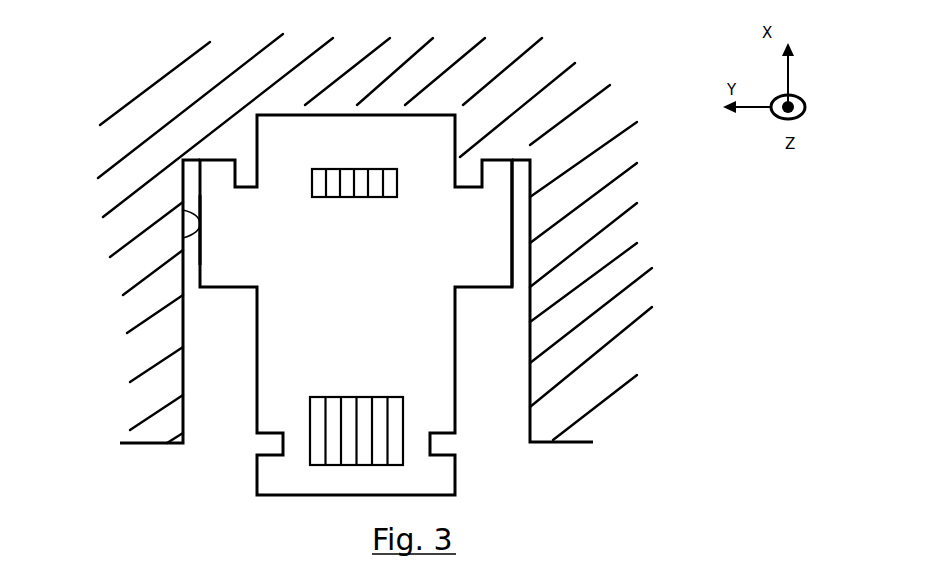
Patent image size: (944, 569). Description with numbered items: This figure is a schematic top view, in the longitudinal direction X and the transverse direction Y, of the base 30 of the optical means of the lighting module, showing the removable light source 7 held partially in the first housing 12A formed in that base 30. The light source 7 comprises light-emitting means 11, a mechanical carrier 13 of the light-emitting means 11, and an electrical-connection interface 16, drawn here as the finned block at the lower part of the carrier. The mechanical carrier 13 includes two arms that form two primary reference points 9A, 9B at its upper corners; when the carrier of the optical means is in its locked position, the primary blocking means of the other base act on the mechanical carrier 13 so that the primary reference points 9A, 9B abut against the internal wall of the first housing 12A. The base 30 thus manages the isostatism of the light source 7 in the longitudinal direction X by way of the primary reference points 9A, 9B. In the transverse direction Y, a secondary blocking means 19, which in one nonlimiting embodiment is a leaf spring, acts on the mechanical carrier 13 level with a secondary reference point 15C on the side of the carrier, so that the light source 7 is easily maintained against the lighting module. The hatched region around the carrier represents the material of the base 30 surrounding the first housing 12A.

The light source 7 is at (222, 470).
The primary reference point 9A is at (227, 175).
The primary reference point 9B is at (533, 142).
The light-emitting means 11 is at (333, 183).
The first housing 12A is at (518, 227).
The mechanical carrier 13 is at (367, 313).
The secondary reference point 15C is at (218, 226).
The electrical-connection interface 16 is at (387, 429).
The secondary blocking means 19 is at (186, 226).
The base 30 is at (588, 380).